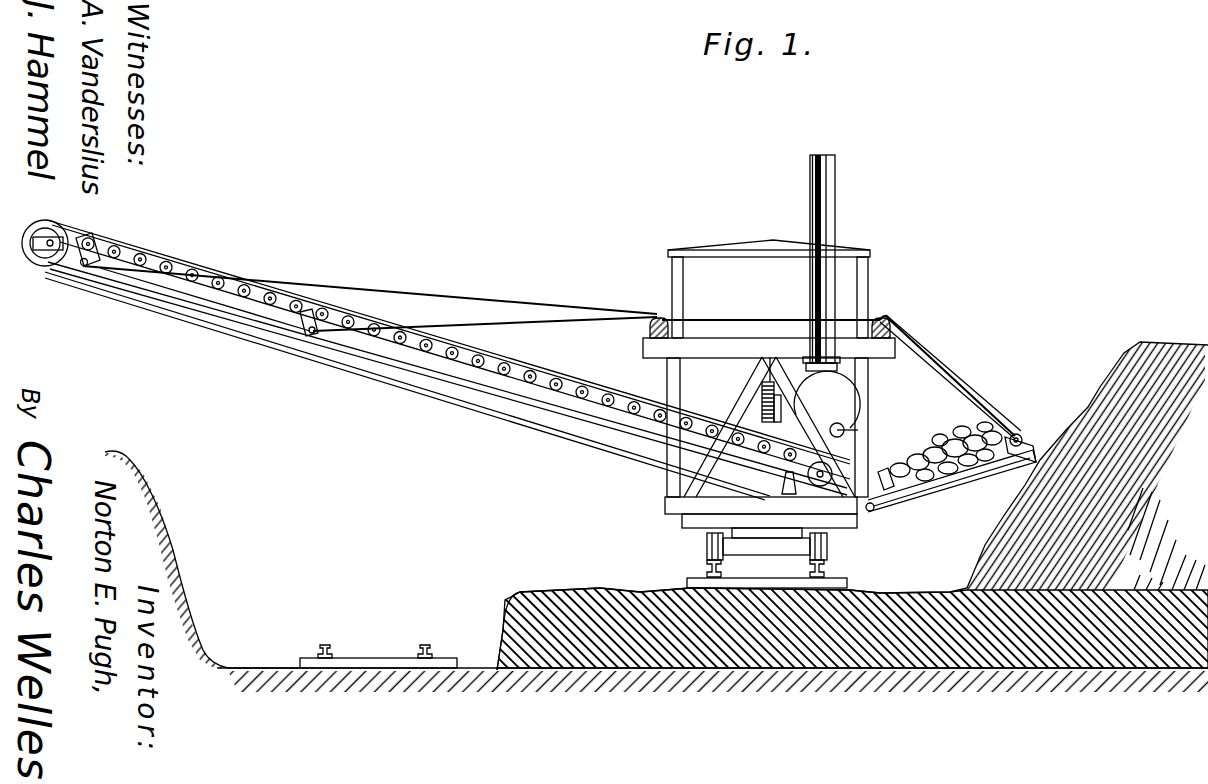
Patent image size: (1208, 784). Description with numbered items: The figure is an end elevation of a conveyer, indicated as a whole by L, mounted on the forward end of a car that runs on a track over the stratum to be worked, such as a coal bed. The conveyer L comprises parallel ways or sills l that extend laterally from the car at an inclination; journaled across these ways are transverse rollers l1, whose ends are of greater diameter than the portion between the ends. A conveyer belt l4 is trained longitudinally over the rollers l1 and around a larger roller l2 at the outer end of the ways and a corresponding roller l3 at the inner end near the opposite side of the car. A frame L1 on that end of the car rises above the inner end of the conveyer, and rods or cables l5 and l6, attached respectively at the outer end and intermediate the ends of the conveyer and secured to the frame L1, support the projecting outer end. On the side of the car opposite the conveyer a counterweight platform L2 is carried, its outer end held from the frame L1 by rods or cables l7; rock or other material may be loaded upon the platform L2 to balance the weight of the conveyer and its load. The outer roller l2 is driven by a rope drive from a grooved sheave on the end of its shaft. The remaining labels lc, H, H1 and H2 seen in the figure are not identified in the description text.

The conveyer L is at (447, 362).
The ways or sills l is at (392, 347).
The transverse rollers l1 is at (468, 362).
The roller at outer end of the ways l2 is at (78, 236).
The end drum / pulley lc is at (38, 222).
The roller at inner end l3 is at (823, 490).
The conveyer belt l4 is at (593, 383).
The rods or cables l5 is at (518, 303).
The rods or cables l6 is at (553, 321).
The rods or cables l7 is at (962, 352).
The frame L1 is at (885, 348).
The counterweight platform L2 is at (951, 476).
The ground / road bed H is at (884, 648).
The bank of material H1 is at (1012, 544).
The excavated bank H2 is at (156, 480).